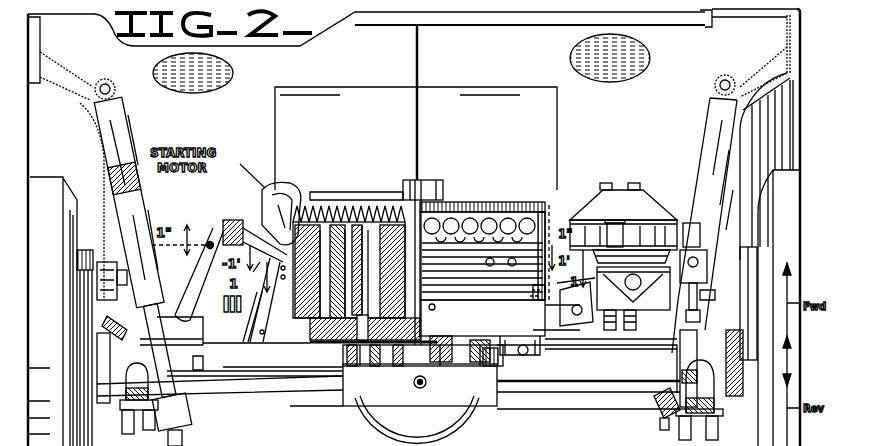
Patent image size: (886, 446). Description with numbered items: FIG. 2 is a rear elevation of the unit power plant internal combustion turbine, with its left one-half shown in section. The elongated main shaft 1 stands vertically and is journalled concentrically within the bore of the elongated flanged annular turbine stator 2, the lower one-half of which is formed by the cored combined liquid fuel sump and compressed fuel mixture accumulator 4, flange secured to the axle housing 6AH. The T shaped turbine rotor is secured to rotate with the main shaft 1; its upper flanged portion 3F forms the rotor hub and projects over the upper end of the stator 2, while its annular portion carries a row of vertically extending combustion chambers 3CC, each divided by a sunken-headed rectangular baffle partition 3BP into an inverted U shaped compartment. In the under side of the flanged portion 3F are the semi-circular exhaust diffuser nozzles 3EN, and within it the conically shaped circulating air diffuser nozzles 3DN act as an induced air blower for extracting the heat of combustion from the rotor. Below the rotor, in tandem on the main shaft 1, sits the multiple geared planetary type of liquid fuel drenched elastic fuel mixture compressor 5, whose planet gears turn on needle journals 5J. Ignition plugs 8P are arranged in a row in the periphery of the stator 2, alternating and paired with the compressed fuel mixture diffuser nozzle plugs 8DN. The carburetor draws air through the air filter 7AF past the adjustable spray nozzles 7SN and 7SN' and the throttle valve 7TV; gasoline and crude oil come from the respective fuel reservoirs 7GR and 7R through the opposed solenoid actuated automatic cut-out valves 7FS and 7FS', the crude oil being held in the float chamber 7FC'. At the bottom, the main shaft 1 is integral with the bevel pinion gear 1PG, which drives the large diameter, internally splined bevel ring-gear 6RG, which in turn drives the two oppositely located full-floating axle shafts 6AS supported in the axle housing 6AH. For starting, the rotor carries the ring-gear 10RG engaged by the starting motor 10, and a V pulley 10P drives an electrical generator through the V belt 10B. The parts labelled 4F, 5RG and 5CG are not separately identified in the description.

The main shaft 1 is at (421, 193).
The turbine stator 2 is at (543, 291).
The exhaust diffuser nozzles 3EN is at (467, 230).
The circulating air diffuser nozzles 3DN is at (512, 204).
The flanged portion 3F is at (340, 205).
The baffle partition 3BP is at (531, 440).
The combustion chambers 3CC is at (469, 441).
The combined liquid fuel sump and compressed fuel mixture accumulator 4 is at (310, 326).
The frame flange 4F is at (482, 318).
The fuel mixture compressor 5 is at (367, 300).
The needle journal 5J is at (329, 441).
The clutch ring gear 5RG is at (377, 441).
The clutch gear 5CG is at (422, 441).
The bevel ring-gear 6RG is at (420, 359).
The axle shafts 6AS is at (421, 390).
The axle housing 6AH is at (214, 378).
The fuel reservoir 7GR is at (232, 70).
The fuel reservoir 7R is at (643, 80).
The air filter 7AF is at (605, 193).
The automatic cut-out valve 7FS is at (618, 221).
The automatic cut-out valve 7FS' is at (678, 251).
The float chamber 7FC' is at (613, 299).
The spray-nozzle 7SN is at (601, 342).
The spray-nozzle 7SN' is at (643, 341).
The throttle-valve 7TV is at (568, 335).
The ignition plugs 8P is at (452, 341).
The drain nipple 8DN is at (490, 341).
The starting motor 10 is at (268, 198).
The V belt 10B is at (313, 198).
The V pulley 10P is at (400, 190).
The ring-gear 10RG is at (538, 210).
The bevel pinion gear 1PG is at (413, 339).